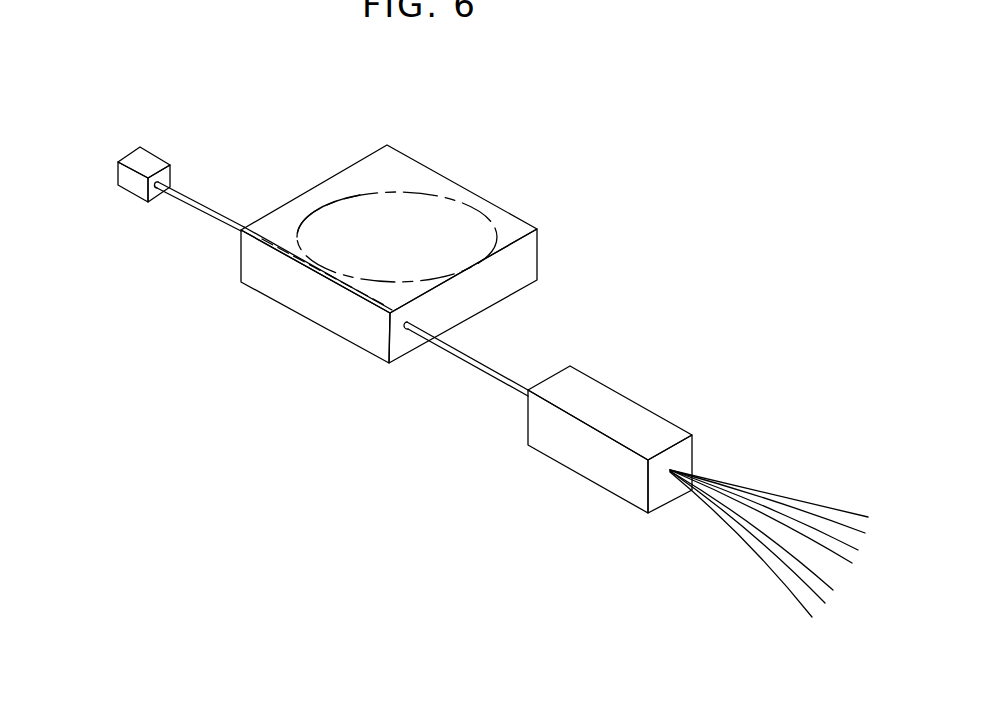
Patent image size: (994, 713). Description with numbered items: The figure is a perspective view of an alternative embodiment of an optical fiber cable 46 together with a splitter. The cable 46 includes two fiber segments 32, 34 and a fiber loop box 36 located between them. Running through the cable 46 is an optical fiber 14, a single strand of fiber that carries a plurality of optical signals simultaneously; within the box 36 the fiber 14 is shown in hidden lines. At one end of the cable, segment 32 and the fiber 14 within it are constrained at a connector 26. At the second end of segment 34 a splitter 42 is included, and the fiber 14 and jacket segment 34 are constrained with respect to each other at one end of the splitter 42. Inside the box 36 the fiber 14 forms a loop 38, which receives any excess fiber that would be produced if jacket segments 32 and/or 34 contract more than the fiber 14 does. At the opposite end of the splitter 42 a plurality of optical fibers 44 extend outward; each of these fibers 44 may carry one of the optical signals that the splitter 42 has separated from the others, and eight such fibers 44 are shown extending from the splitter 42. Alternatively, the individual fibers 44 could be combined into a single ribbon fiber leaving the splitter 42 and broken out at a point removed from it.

The optical fiber 14 is at (343, 200).
The connector 26 is at (135, 182).
The fiber segment 32 is at (197, 202).
The fiber segment 34 is at (480, 368).
The fiber loop box 36 is at (400, 245).
The loop 38 is at (443, 200).
The splitter 42 is at (628, 413).
The optical fibers 44 is at (835, 510).
The optical fiber cable 46 is at (255, 330).